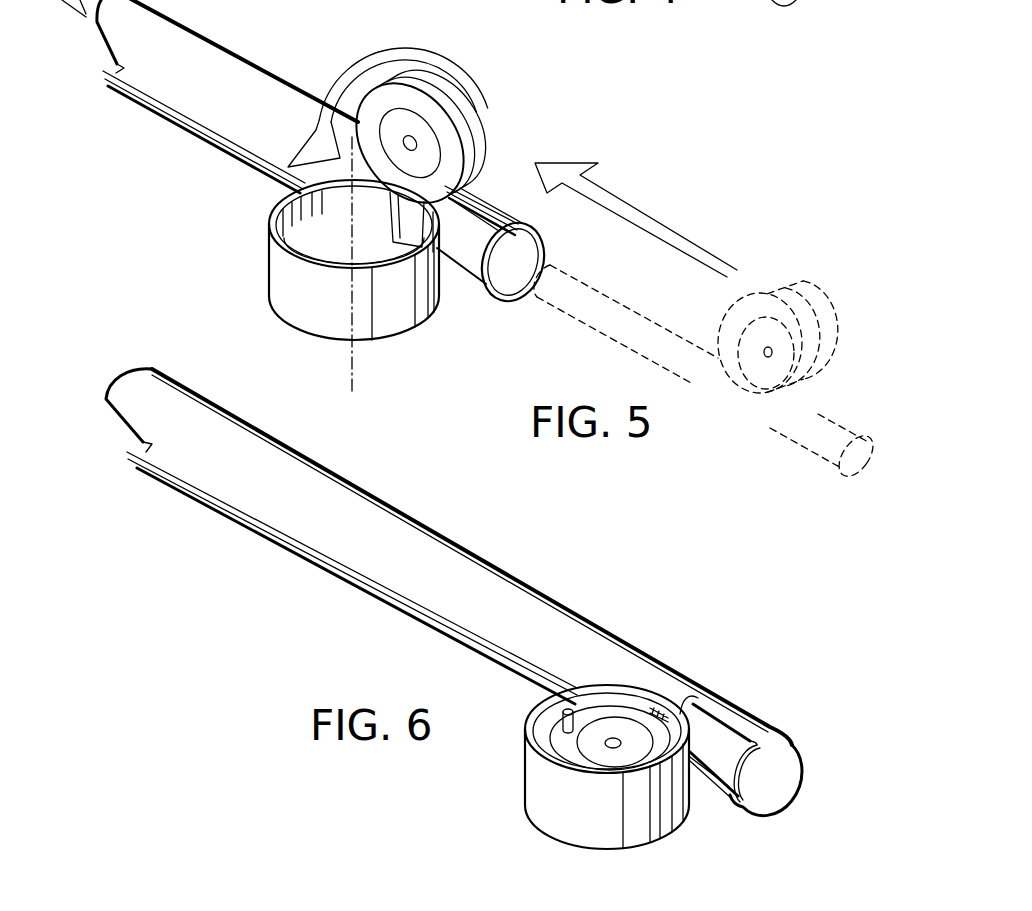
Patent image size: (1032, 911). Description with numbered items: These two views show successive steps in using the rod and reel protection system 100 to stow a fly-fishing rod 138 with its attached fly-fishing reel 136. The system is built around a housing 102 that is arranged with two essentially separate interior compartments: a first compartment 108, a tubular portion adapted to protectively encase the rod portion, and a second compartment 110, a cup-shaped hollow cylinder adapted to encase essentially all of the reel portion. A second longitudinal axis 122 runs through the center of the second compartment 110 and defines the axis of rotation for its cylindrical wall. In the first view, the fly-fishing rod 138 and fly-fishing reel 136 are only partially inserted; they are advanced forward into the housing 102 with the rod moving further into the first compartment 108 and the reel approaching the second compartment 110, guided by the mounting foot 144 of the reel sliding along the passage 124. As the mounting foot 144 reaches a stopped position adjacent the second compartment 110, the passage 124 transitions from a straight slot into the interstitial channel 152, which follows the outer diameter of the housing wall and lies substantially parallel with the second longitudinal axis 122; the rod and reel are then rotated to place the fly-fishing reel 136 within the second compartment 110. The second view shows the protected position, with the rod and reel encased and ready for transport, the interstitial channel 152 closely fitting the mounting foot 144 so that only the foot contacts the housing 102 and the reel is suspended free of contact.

In FIG. 5, the rod and reel protection system 100 is at (228, 20).
In FIG. 6, the rod and reel protection system 100 is at (558, 580).
In FIG. 5, the housing 102 is at (263, 55).
In FIG. 6, the housing 102 is at (596, 608).
In FIG. 5, the first compartment 108 is at (520, 306).
In FIG. 6, the first compartment 108 is at (767, 779).
In FIG. 5, the second compartment 110 is at (330, 262).
In FIG. 6, the second compartment 110 is at (548, 727).
In FIG. 5, the second longitudinal axis 122 is at (352, 388).
In FIG. 5, the passage 124 is at (503, 201).
In FIG. 6, the passage 124 is at (715, 746).
In FIG. 5, the fly-fishing reel 136 is at (483, 137).
In FIG. 6, the fly-fishing reel 136 is at (575, 748).
In FIG. 5, the fly-fishing rod 138 is at (540, 248).
In FIG. 6, the fly-fishing rod 138 is at (797, 757).
In FIG. 5, the mounting foot 144 is at (494, 194).
In FIG. 5, the interstitial channel 152 is at (290, 192).
In FIG. 6, the interstitial channel 152 is at (427, 619).